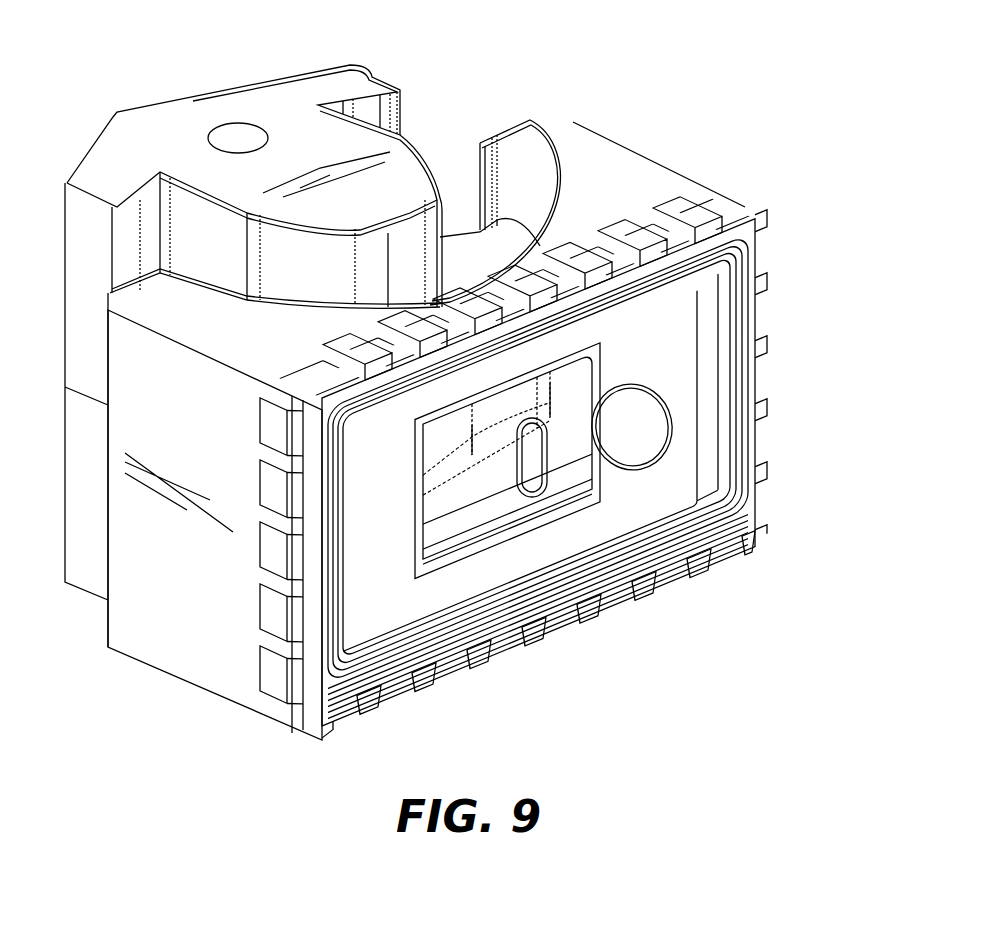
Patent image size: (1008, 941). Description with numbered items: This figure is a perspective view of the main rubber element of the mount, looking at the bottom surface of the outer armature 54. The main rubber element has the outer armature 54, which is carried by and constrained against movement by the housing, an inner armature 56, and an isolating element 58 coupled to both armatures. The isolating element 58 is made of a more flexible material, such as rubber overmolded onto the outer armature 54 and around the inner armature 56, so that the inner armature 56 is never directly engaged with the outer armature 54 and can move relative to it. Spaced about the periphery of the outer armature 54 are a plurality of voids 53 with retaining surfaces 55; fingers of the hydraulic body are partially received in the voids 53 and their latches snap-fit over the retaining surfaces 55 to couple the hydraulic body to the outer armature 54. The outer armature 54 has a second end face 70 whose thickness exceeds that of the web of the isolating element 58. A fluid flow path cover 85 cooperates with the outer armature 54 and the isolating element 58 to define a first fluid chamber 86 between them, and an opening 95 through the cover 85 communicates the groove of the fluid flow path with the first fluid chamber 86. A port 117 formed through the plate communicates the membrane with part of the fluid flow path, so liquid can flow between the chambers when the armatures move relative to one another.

The voids 53 is at (643, 237).
The outer armature 54 is at (676, 152).
The retaining surfaces 55 is at (660, 248).
The inner armature 56 is at (378, 52).
The isolating element 58 is at (454, 188).
The second end face 70 is at (752, 388).
The fluid flow path cover 85 is at (428, 597).
The first fluid chamber 86 is at (530, 441).
The opening 95 is at (534, 489).
The port 117 is at (625, 465).